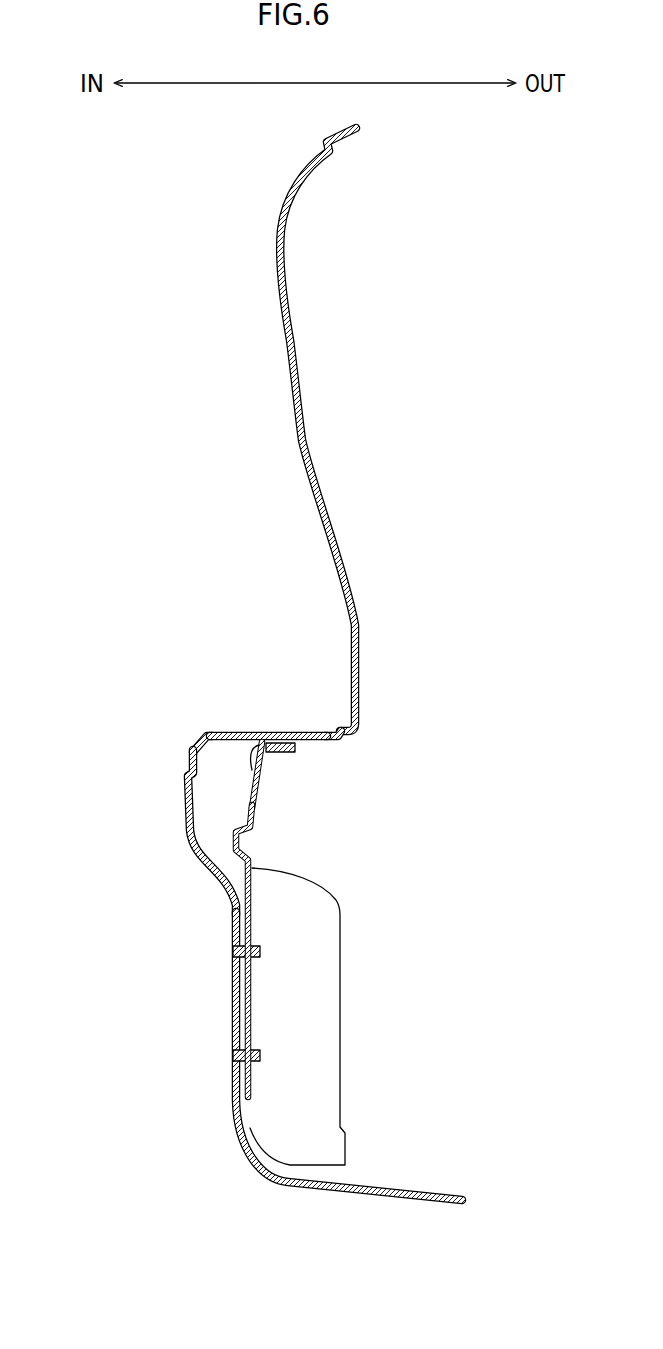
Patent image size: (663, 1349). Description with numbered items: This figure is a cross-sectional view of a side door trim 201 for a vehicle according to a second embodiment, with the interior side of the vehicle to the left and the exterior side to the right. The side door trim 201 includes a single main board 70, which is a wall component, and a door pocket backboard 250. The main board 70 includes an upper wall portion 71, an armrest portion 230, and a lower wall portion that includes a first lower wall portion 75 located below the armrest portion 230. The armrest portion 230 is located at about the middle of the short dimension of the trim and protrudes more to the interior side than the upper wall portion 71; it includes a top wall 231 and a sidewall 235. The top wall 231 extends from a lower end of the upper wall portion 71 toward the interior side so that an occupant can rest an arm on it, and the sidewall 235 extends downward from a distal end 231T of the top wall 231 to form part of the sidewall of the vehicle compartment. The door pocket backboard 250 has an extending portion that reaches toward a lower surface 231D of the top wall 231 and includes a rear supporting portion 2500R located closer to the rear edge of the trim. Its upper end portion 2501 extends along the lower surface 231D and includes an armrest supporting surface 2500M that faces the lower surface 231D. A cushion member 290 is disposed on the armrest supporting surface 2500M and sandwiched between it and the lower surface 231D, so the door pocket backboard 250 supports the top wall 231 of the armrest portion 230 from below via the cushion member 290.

The side door trim 201 is at (108, 247).
The main board 70 is at (265, 327).
The upper wall portion 71 is at (298, 432).
The first lower wall portion 75 is at (230, 997).
The armrest portion 230 is at (125, 692).
The top wall 231 is at (258, 735).
The distal end 231T is at (205, 733).
The lower surface 231D is at (328, 738).
The sidewall 235 is at (186, 792).
The cushion member 290 is at (290, 740).
The upper end portion 2501 is at (286, 752).
The armrest supporting surface 2500M is at (256, 786).
The rear supporting portion 2500R is at (253, 818).
The door pocket backboard 250 is at (358, 1007).